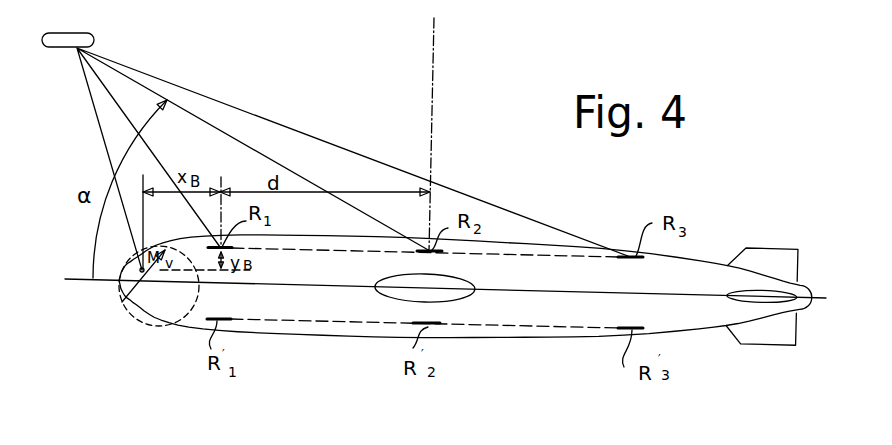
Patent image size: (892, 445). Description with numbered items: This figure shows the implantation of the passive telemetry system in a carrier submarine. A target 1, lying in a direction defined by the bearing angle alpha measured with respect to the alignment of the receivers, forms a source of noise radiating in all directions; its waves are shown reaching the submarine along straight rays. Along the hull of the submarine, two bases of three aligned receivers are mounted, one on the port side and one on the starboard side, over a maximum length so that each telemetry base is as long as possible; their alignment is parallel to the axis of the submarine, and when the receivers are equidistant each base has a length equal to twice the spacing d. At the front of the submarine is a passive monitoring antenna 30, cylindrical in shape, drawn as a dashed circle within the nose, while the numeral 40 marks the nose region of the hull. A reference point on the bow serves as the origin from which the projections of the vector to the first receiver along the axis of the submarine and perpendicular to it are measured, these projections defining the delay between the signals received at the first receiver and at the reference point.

The target 1 is at (60, 37).
The hull of underwater vehicle 40 is at (125, 295).
The passive monitoring antenna 30 is at (157, 307).